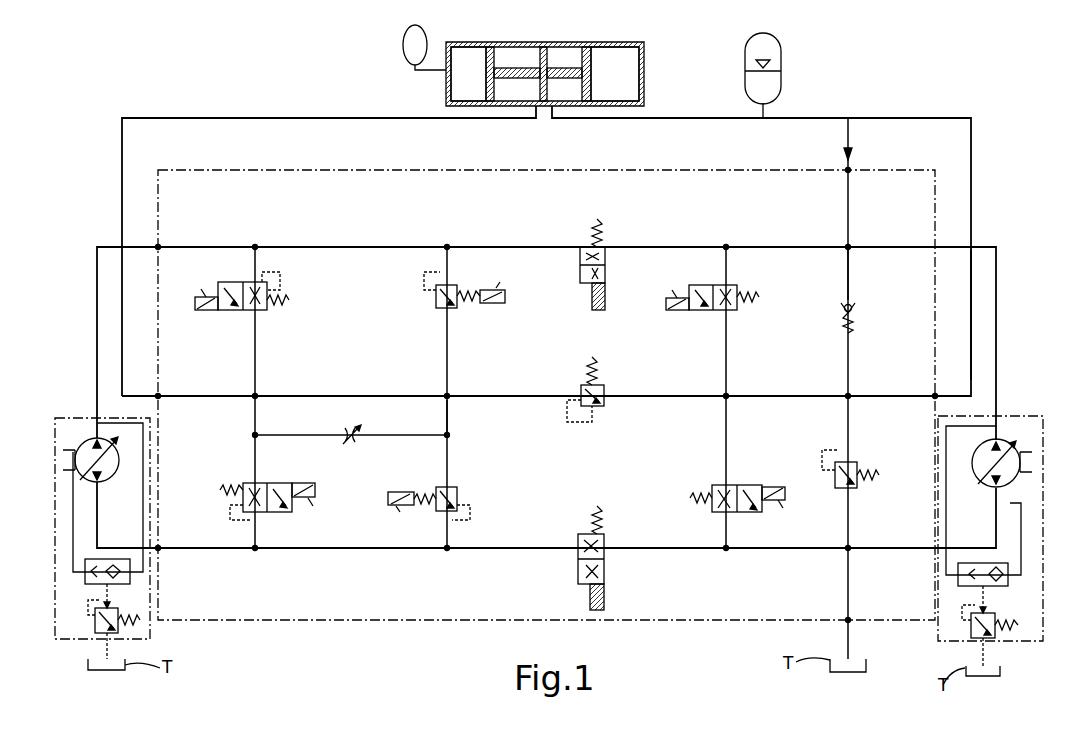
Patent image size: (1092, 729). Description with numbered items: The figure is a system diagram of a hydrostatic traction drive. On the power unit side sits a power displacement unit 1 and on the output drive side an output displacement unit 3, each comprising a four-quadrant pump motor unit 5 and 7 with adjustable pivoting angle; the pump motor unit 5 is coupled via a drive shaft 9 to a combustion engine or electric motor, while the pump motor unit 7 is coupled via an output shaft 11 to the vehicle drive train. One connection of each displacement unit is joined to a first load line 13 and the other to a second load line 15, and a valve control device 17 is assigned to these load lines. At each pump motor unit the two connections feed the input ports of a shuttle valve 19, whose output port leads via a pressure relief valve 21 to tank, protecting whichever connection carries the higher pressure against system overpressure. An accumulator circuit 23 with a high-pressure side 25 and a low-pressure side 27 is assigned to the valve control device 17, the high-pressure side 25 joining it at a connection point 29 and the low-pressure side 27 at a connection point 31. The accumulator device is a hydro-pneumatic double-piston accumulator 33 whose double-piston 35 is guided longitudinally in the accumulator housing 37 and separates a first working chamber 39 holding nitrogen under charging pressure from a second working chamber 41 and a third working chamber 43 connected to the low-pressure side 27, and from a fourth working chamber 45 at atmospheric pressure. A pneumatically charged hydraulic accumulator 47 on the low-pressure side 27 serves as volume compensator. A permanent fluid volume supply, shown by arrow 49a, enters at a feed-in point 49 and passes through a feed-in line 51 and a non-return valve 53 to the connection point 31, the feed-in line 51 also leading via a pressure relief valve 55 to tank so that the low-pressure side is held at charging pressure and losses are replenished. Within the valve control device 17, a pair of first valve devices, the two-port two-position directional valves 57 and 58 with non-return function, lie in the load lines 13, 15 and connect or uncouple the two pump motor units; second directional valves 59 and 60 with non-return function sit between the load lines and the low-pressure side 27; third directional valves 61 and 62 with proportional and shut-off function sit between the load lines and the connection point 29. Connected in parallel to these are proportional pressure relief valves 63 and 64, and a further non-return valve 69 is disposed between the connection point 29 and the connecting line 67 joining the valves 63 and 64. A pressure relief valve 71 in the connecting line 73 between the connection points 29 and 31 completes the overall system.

The power displacement unit 1 is at (78, 418).
The output displacement unit 3 is at (1012, 420).
The pump motor unit 5 is at (115, 476).
The pump motor unit 7 is at (990, 489).
The drive shaft 9 is at (70, 418).
The output shaft 11 is at (1026, 476).
The first load line 13 is at (360, 247).
The second load line 15 is at (678, 548).
The valve control device 17 is at (155, 212).
The shuttle valve 19 is at (130, 574).
The pressure relief valve 21 is at (100, 632).
The accumulator circuit 23 is at (368, 88).
The high-pressure side 25 is at (182, 118).
The low-pressure side 27 is at (971, 305).
The connection point 29 is at (258, 396).
The connection point 31 is at (846, 396).
The hydro-pneumatic double-piston accumulator 33 is at (442, 62).
The double-piston 35 is at (520, 74).
The accumulator housing 37 is at (622, 48).
The first working chamber 39 is at (455, 84).
The second working chamber 41 is at (508, 60).
The third working chamber 43 is at (572, 62).
The fourth working chamber 45 is at (630, 72).
The hydraulic accumulator 47 is at (781, 75).
The feed-in point 49 is at (852, 170).
The arrow 49a is at (850, 146).
The feed-in line 51 is at (850, 282).
The non-return valve 53 is at (855, 316).
The pressure relief valve 55 is at (858, 466).
The 2/2-way valve 57 is at (612, 255).
The 2/2-way valve 58 is at (606, 548).
The 2/2-way valve 59 is at (738, 311).
The 2/2-way valve 60 is at (742, 485).
The 2/2-way valve 61 is at (232, 282).
The 2/2-way valve 62 is at (248, 483).
The pressure relief valve 63 is at (450, 308).
The pressure relief valve 64 is at (457, 487).
The connecting line 67 is at (450, 419).
The non-return valve 69 is at (362, 441).
The pressure relief valve 71 is at (598, 406).
The connecting line 73 is at (650, 396).